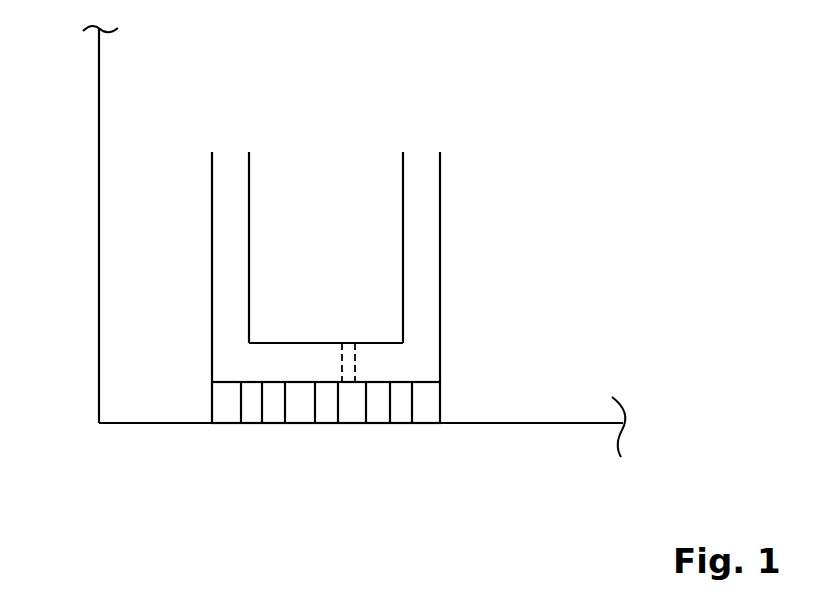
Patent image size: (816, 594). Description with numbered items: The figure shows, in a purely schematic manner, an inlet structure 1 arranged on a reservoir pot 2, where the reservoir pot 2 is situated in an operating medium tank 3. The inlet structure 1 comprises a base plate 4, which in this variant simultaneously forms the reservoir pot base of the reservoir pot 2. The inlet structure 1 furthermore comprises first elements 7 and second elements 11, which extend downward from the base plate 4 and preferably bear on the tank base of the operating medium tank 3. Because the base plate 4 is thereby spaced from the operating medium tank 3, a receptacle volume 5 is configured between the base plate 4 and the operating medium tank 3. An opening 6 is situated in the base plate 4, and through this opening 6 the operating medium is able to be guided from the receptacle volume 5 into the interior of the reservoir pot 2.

The inlet structure 1 is at (505, 385).
The reservoir pot 2 is at (447, 240).
The operating medium tank 3 is at (99, 122).
The base plate 4 is at (385, 363).
The receptacle volume 5 is at (200, 405).
The opening 6 is at (337, 362).
The first elements 7 is at (272, 403).
The second elements 11 is at (323, 405).